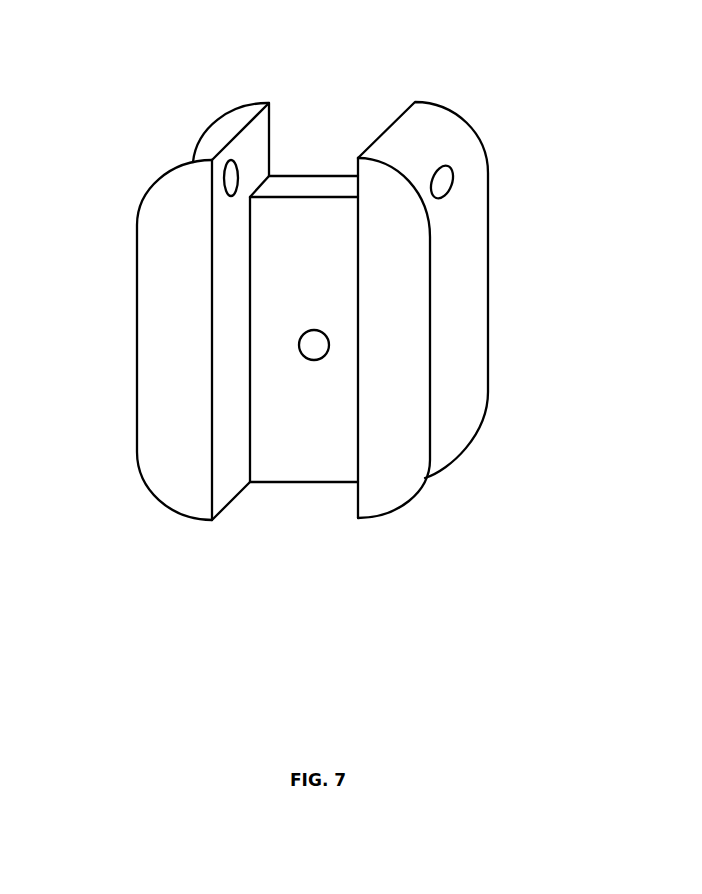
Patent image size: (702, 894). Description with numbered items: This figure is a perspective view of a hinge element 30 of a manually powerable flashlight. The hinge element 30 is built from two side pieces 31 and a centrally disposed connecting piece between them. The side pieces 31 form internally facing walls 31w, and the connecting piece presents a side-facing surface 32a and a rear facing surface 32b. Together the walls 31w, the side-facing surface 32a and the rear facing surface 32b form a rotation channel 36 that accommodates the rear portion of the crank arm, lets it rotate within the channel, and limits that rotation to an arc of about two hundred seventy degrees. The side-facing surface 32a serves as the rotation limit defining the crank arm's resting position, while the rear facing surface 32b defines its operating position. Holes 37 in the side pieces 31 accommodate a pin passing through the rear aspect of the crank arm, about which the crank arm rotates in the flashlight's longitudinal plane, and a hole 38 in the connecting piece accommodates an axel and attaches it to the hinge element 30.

The hinge element 30 is at (317, 309).
The side pieces 31 is at (306, 354).
The internally facing walls 31w is at (358, 498).
The side-facing surface 32a is at (300, 268).
The rear facing surface 32b is at (302, 190).
The rotation channel 36 is at (322, 167).
The holes 37 is at (229, 171).
The hole 38 is at (312, 346).